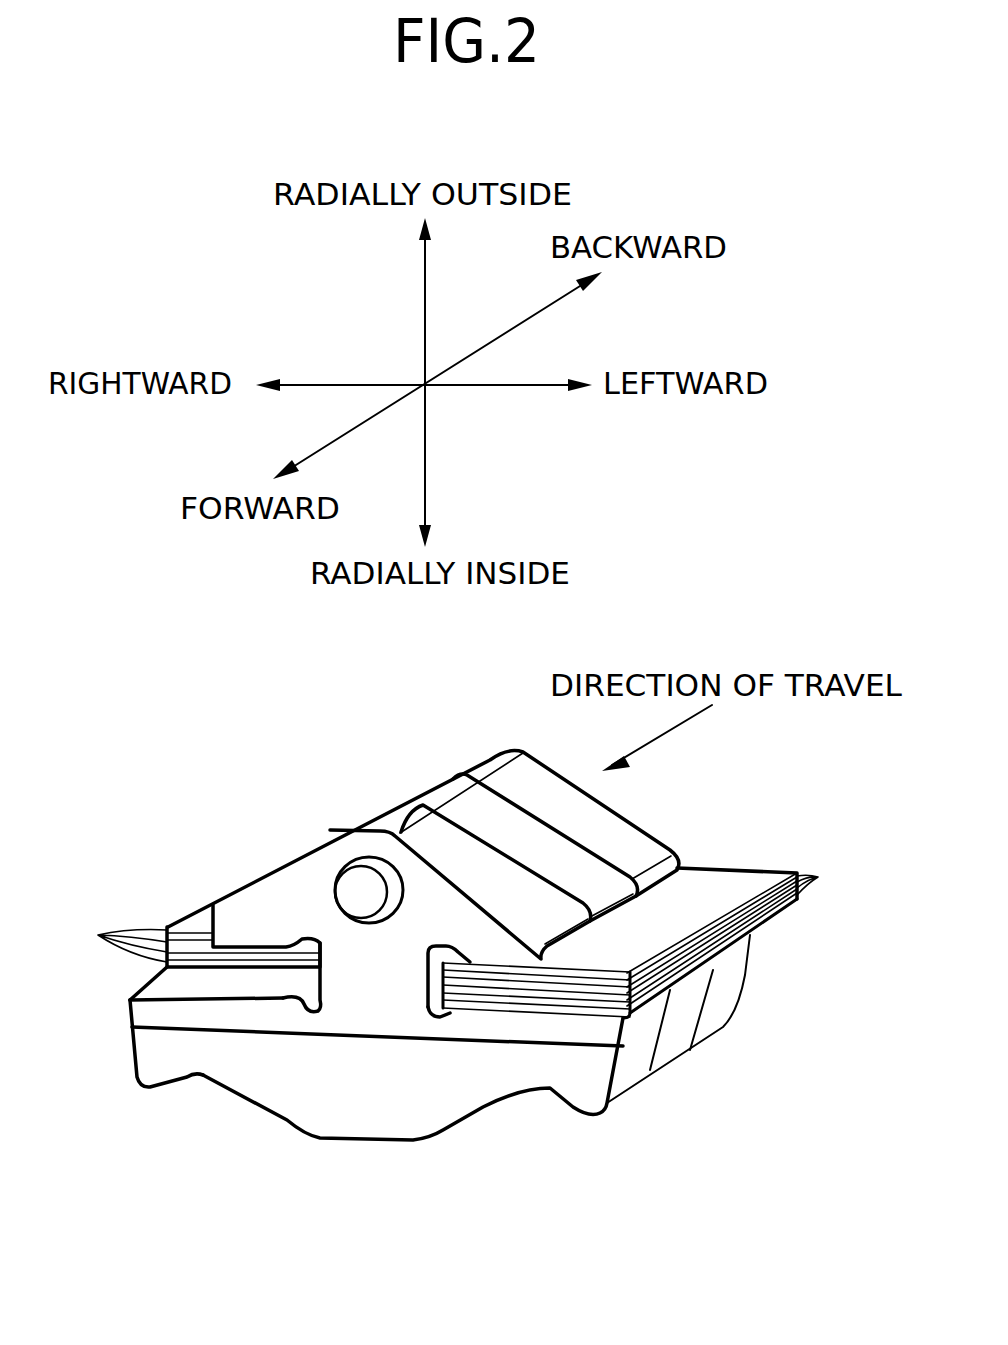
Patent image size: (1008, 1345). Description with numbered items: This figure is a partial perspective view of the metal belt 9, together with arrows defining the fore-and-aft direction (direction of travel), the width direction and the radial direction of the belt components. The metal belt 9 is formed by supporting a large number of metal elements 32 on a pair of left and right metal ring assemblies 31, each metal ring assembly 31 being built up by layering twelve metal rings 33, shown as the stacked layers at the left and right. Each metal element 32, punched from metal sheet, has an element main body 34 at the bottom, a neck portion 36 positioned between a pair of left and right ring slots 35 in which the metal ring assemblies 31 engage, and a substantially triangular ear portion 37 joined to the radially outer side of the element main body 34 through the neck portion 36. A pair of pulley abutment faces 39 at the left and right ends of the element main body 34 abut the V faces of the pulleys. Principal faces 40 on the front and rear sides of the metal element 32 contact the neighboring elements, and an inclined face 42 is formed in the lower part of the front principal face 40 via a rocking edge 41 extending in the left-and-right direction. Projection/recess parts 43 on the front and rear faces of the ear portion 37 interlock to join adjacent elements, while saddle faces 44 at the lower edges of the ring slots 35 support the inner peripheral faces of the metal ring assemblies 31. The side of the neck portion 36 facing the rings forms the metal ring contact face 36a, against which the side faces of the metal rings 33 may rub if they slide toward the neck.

The metal belt 9 is at (427, 724).
The metal ring assembly 31 is at (183, 902).
The metal element 32 is at (488, 1143).
The metal ring 33 is at (467, 938).
The element main body 34 is at (163, 1053).
The ring slot 35 is at (307, 1000).
The neck portion 36 is at (389, 1022).
The metal ring contact face 36a is at (450, 1013).
The ear portion 37 is at (300, 897).
The pulley abutment face 39 is at (632, 1067).
The principal face 40 is at (391, 981).
The rocking edge 41 is at (278, 1034).
The inclined face 42 is at (398, 1100).
The projection/recess part 43 is at (358, 887).
The saddle face 44 is at (220, 980).